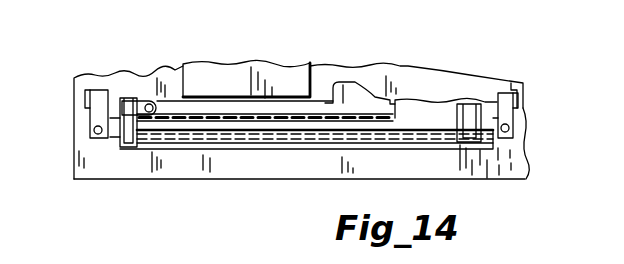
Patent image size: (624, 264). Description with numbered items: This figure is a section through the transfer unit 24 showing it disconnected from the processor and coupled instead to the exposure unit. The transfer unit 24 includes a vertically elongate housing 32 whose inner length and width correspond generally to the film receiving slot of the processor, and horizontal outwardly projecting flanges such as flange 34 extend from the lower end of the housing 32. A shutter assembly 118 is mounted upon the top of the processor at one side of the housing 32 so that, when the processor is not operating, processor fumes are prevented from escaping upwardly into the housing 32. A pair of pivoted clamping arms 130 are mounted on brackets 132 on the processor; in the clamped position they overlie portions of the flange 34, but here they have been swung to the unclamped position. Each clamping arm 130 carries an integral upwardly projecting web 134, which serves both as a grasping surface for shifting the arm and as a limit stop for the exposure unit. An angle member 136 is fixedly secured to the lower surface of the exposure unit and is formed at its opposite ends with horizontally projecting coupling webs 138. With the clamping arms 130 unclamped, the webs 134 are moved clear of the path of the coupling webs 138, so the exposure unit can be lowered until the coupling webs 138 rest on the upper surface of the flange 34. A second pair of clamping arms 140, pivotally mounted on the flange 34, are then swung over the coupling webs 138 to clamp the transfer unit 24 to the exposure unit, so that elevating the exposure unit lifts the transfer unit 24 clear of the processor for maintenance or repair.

The transfer unit 24 is at (333, 150).
The housing 32 is at (225, 138).
The flange 34 is at (172, 105).
The shutter assembly 118 is at (278, 72).
The clamping arm 130 is at (98, 103).
The bracket 132 is at (80, 102).
The upwardly projecting web 134 is at (507, 100).
The angle member 136 is at (297, 145).
The coupling web 138 is at (132, 130).
The second clamping arm 140 is at (140, 110).